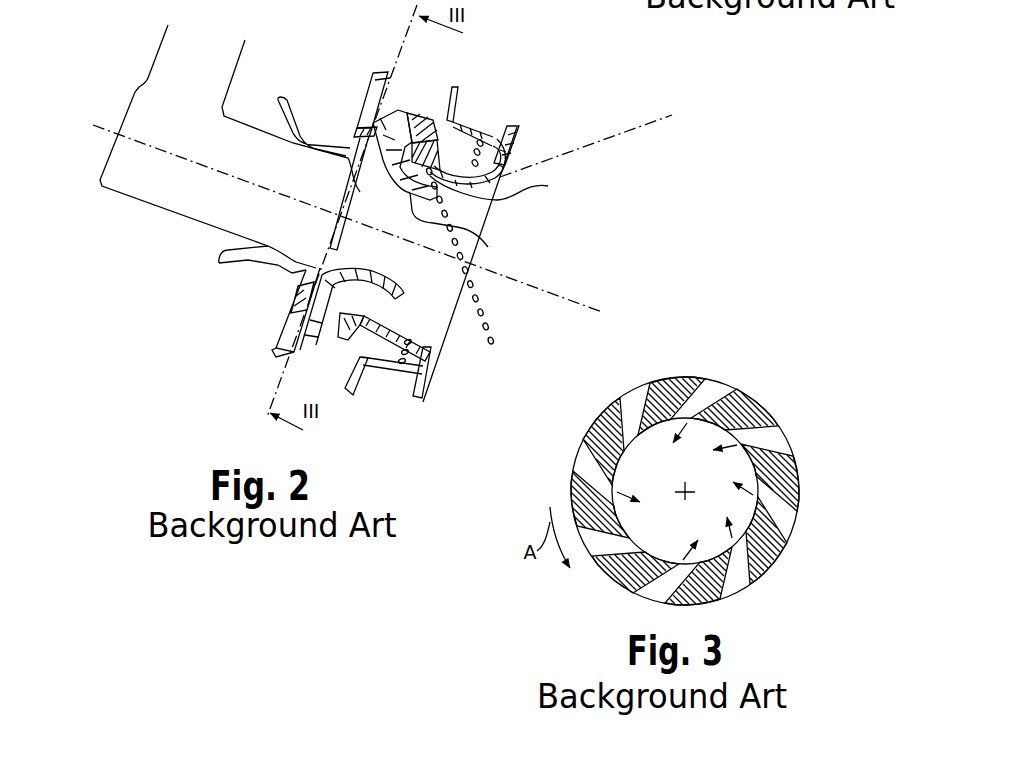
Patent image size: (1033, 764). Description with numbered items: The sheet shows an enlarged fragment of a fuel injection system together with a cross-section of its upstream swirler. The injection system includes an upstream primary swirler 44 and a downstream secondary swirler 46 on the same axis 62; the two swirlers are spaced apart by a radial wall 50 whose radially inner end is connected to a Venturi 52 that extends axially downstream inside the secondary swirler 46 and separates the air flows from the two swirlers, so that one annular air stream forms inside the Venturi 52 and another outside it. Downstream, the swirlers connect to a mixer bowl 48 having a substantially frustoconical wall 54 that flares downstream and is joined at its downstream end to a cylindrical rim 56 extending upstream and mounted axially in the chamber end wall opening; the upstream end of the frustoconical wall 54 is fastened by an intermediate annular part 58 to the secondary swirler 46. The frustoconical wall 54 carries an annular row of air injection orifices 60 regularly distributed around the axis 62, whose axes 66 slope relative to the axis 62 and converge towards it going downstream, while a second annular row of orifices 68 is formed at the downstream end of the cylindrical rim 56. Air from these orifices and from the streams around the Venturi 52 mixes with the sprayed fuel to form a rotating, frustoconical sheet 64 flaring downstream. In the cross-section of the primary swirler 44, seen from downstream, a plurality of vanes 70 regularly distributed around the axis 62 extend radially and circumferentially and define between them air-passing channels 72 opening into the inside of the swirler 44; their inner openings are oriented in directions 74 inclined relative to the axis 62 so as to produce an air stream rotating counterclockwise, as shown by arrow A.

In FIG. 2, the primary swirler 44 is at (400, 78).
In FIG. 3, the primary swirler 44 is at (786, 403).
In FIG. 2, the secondary swirler 46 is at (428, 100).
In FIG. 2, the mixer bowl 48 is at (522, 148).
In FIG. 2, the radial wall 50 is at (423, 103).
In FIG. 2, the Venturi 52 is at (482, 242).
In FIG. 2, the frustoconical wall 54 is at (488, 203).
In FIG. 2, the cylindrical rim 56 is at (466, 121).
In FIG. 2, the intermediate annular part 58 is at (448, 153).
In FIG. 2, the air injection orifices 60 is at (462, 280).
In FIG. 2, the axis 62 is at (581, 304).
In FIG. 3, the axis 62 is at (686, 491).
In FIG. 2, the rotating sheet 64 is at (652, 123).
In FIG. 2, the axes of the air injection orifices 66 is at (506, 186).
In FIG. 2, the second annular row of orifices 68 is at (500, 140).
In FIG. 3, the vanes 70 is at (758, 401).
In FIG. 3, the air-passing channels 72 is at (713, 393).
In FIG. 3, the directions 74 is at (643, 463).